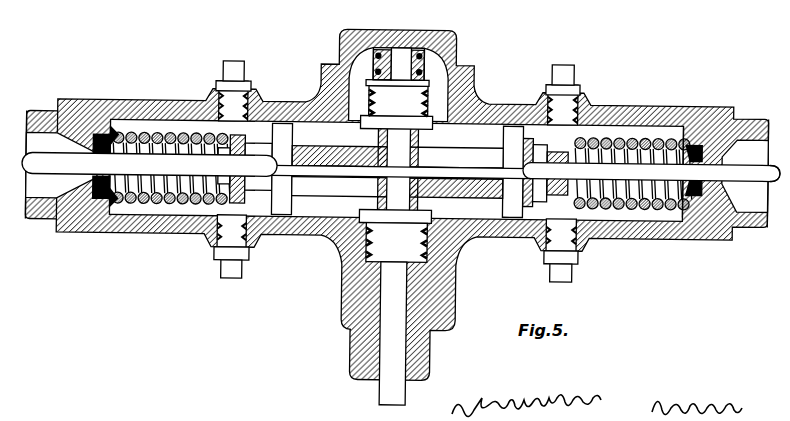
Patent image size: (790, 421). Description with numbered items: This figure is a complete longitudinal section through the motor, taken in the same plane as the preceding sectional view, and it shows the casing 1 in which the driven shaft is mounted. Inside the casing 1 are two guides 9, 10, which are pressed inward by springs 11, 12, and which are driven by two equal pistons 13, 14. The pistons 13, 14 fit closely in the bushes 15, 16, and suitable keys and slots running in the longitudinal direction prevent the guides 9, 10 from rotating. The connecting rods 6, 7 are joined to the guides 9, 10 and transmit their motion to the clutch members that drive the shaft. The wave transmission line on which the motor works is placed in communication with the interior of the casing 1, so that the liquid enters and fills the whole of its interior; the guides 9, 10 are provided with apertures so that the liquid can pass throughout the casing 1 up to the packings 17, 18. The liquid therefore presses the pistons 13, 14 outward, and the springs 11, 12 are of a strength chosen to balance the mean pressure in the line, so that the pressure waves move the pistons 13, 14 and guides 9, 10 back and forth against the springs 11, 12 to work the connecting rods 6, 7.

The casing 1 is at (158, 238).
The connecting rod 6 is at (353, 155).
The connecting rod 7 is at (303, 192).
The guide 9 is at (238, 218).
The guide 10 is at (533, 216).
The spring 11 is at (178, 137).
The spring 12 is at (645, 136).
The piston 13 is at (150, 162).
The piston 14 is at (760, 162).
The bush 15 is at (95, 187).
The bush 16 is at (722, 198).
The packing 17 is at (102, 200).
The packing 18 is at (690, 218).